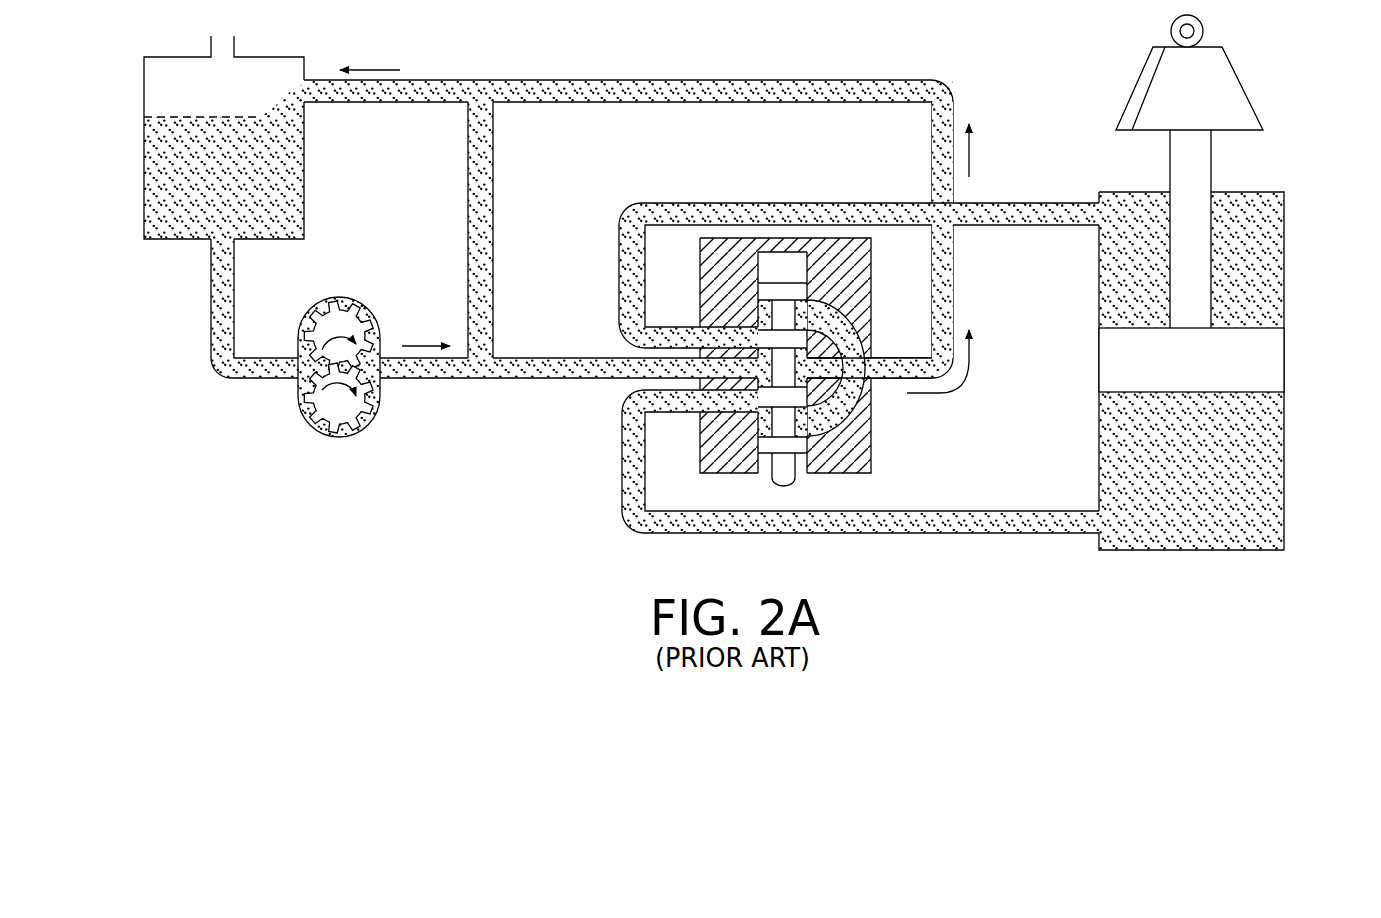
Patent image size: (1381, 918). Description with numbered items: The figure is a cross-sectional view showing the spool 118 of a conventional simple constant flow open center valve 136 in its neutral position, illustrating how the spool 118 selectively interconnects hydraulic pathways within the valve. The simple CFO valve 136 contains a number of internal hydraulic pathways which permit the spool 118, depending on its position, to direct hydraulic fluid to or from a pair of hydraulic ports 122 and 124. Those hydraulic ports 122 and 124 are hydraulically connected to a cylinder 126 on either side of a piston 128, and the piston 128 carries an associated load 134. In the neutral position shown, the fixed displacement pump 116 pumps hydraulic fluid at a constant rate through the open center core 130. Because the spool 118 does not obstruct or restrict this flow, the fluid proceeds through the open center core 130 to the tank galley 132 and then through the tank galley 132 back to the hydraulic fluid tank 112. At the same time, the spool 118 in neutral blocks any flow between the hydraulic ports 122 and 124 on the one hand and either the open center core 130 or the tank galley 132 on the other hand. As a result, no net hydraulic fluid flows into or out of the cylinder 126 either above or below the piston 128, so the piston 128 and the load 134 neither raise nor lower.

The hydraulic fluid tank 112 is at (144, 97).
The fixed displacement pump 116 is at (298, 388).
The spool 118 is at (797, 477).
The hydraulic port 122 is at (720, 407).
The hydraulic port 124 is at (700, 328).
The cylinder 126 is at (1285, 470).
The piston 128 is at (1257, 348).
The open center core 130 is at (438, 380).
The tank galley 132 is at (428, 80).
The load 134 is at (1228, 62).
The simple CFO valve 136 is at (871, 452).